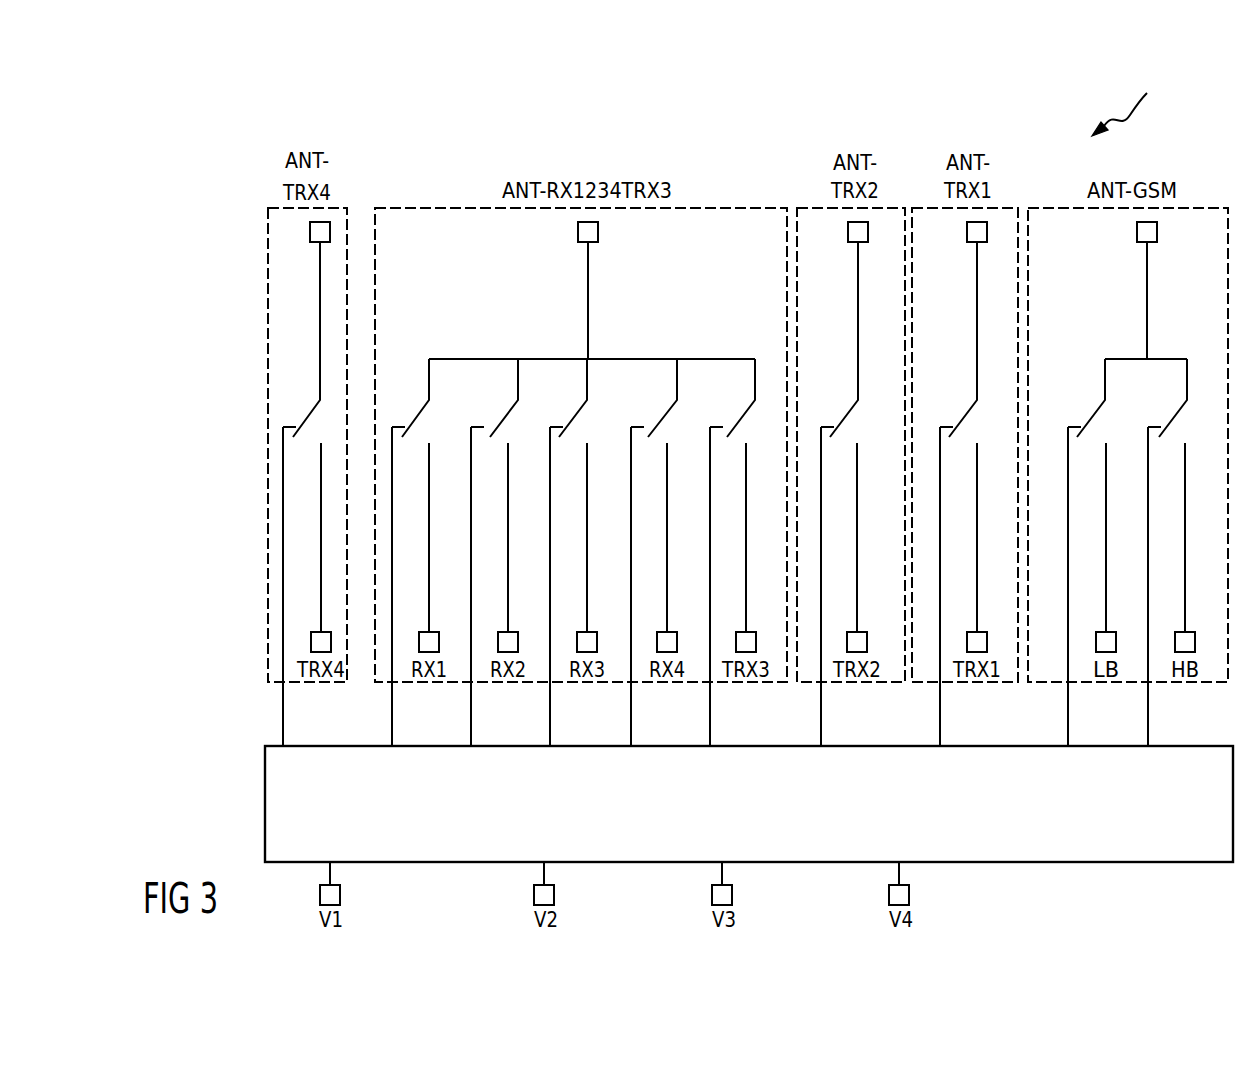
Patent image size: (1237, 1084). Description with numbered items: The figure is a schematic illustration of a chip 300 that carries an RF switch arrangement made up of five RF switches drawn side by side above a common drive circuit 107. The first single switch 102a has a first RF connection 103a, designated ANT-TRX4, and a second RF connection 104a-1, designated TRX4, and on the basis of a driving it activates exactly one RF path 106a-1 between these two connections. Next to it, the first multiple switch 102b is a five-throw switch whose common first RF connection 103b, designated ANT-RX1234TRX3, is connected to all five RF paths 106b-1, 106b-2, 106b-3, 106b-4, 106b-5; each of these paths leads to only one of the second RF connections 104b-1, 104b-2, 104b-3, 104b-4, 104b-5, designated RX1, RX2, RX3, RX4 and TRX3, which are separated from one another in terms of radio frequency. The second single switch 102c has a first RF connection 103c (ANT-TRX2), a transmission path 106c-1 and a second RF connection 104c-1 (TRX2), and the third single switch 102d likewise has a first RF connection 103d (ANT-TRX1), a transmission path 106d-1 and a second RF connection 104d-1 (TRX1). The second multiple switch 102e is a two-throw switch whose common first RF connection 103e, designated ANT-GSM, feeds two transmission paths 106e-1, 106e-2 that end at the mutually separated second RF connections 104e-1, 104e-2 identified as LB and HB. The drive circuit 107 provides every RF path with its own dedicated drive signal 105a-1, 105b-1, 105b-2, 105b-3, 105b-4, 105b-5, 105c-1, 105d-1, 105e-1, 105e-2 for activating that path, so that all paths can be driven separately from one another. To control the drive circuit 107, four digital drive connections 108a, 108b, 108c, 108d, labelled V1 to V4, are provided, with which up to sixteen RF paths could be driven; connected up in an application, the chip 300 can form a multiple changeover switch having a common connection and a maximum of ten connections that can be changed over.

The chip 300 is at (1197, 97).
The first single switch 102a is at (268, 257).
The first multiple switch 102b is at (440, 208).
The second single switch 102c is at (797, 208).
The third single switch 102d is at (912, 208).
The second multiple switch 102e is at (1028, 208).
The first RF connection 103a is at (312, 244).
The common first RF connection 103b is at (598, 242).
The first RF connection 103c is at (850, 243).
The first RF connection 103d is at (968, 243).
The common first RF connection 103e is at (1157, 242).
The second RF connection 104a-1 is at (332, 646).
The second RF connection 104b-1 is at (440, 646).
The second RF connection 104b-2 is at (519, 646).
The second RF connection 104b-3 is at (598, 646).
The second RF connection 104b-4 is at (678, 646).
The second RF connection 104b-5 is at (757, 646).
The second RF connection 104c-1 is at (868, 646).
The second RF connection 104d-1 is at (988, 646).
The second RF connection 104e-1 is at (1117, 646).
The second RF connection 104e-2 is at (1196, 646).
The drive signal 105a-1 is at (287, 748).
The drive signal 105b-1 is at (396, 748).
The drive signal 105b-2 is at (475, 748).
The drive signal 105b-3 is at (554, 748).
The drive signal 105b-4 is at (635, 748).
The drive signal 105b-5 is at (714, 748).
The drive signal 105c-1 is at (825, 748).
The drive signal 105d-1 is at (944, 748).
The drive signal 105e-1 is at (1072, 748).
The drive signal 105e-2 is at (1152, 748).
The RF path 106a-1 is at (320, 328).
The RF path 106b-1 is at (432, 366).
The RF path 106b-2 is at (518, 366).
The RF path 106b-3 is at (588, 366).
The RF path 106b-4 is at (677, 366).
The RF path 106b-5 is at (760, 340).
The transmission path 106c-1 is at (858, 312).
The transmission path 106d-1 is at (977, 312).
The transmission path 106e-1 is at (1098, 408).
The transmission path 106e-2 is at (1178, 413).
The drive circuit 107 is at (265, 805).
The digital drive connection 108a is at (341, 893).
The digital drive connection 108b is at (555, 893).
The digital drive connection 108c is at (733, 893).
The digital drive connection 108d is at (910, 893).